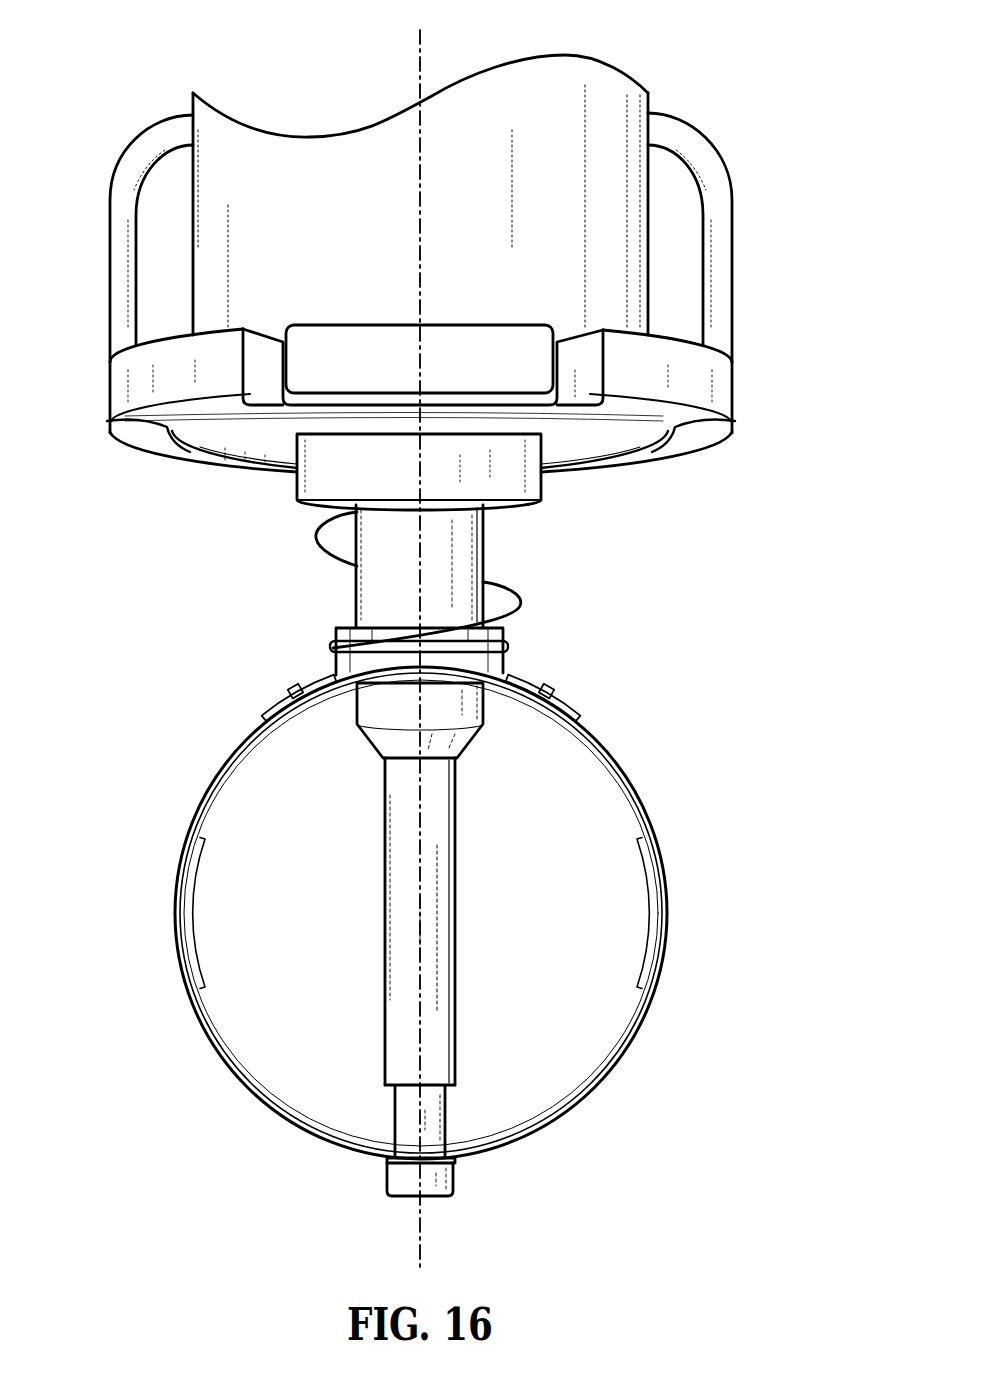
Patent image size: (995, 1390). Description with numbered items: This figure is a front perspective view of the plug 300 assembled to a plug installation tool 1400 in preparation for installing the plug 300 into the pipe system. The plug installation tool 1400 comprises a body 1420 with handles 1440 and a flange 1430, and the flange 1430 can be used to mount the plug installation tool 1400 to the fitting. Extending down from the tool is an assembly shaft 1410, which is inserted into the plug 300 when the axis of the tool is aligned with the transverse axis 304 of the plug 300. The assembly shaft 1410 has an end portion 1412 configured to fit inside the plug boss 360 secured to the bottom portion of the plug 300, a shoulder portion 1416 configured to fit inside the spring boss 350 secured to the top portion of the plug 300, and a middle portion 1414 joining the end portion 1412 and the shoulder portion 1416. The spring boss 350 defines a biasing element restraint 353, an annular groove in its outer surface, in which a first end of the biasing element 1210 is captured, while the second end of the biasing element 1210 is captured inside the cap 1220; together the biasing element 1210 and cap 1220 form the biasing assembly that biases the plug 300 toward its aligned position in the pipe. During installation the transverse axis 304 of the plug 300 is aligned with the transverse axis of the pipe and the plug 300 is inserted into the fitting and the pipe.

The plug installation tool 1400 is at (543, 82).
The body 1420 is at (300, 158).
The handles 1440 is at (745, 195).
The flange 1430 is at (723, 382).
The cap 1220 is at (507, 472).
The biasing element 1210 is at (506, 589).
The spring boss 350 is at (335, 635).
The biasing element restraint 353 is at (508, 646).
The plug 300 is at (593, 1088).
The shoulder portion 1416 is at (457, 700).
The assembly shaft 1410 is at (440, 823).
The middle portion 1414 is at (432, 988).
The end portion 1412 is at (478, 1103).
The plug boss 360 is at (455, 1180).
The transverse axis 304 is at (420, 1235).